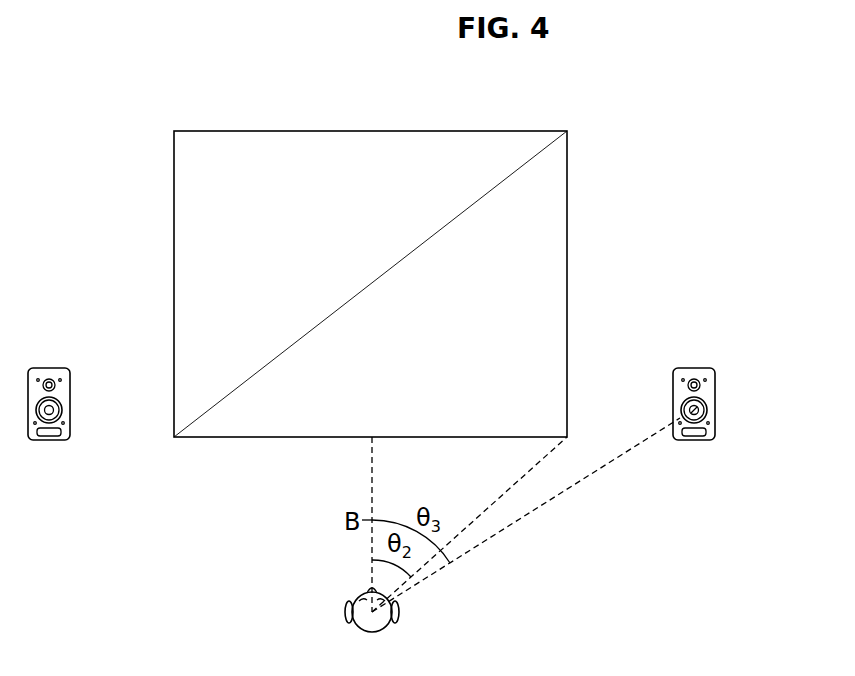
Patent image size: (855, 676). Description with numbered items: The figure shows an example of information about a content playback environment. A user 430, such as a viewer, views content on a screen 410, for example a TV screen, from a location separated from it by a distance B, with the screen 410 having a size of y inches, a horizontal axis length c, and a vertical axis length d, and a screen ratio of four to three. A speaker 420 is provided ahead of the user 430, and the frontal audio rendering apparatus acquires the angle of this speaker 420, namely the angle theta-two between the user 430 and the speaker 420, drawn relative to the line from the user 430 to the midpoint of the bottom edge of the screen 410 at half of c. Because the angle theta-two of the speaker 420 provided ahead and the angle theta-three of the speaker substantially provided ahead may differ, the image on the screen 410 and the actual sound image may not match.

The screen 410 is at (465, 131).
The speaker 420 is at (714, 368).
The user 430 is at (399, 612).